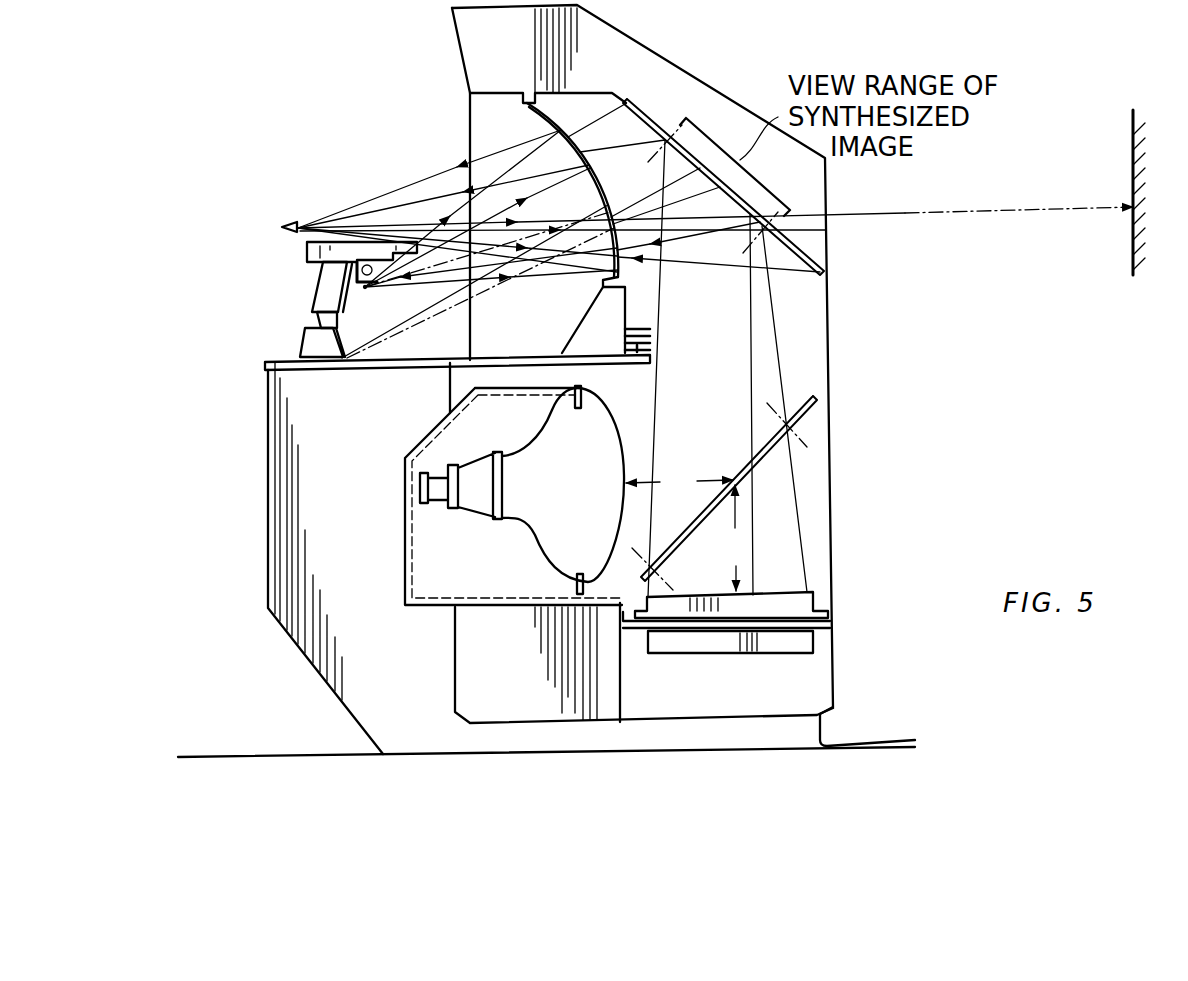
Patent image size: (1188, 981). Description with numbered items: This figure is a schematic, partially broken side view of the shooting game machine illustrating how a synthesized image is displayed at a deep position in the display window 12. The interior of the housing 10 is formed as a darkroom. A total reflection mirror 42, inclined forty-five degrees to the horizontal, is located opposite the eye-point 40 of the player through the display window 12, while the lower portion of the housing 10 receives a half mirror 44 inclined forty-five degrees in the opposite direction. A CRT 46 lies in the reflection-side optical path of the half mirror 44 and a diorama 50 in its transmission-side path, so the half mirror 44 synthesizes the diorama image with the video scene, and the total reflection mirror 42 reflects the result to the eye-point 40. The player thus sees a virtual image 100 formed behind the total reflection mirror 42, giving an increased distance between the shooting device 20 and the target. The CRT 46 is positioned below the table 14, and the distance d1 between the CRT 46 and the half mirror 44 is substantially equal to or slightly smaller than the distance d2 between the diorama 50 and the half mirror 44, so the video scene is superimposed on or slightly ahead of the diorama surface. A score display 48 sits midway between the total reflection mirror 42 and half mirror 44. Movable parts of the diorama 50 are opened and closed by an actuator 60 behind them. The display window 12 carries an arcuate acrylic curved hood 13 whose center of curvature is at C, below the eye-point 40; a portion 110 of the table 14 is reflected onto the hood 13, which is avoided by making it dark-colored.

The housing 10 is at (268, 553).
The display window 12 is at (527, 106).
The acrylic curved hood 13 is at (535, 121).
The table 14 is at (270, 362).
The shooting device 20 is at (313, 263).
The eye-point 40 is at (292, 226).
The total reflection mirror 42 is at (664, 138).
The half mirror 44 is at (817, 404).
The CRT 46 is at (600, 400).
The score display 48 is at (645, 330).
The diorama 50 is at (793, 604).
The actuator 60 is at (793, 643).
The virtual image 100 is at (1133, 150).
The reflected portion of the table 110 is at (410, 372).
The center of curvature C is at (360, 291).
The distance between CRT and half mirror d1 is at (679, 484).
The distance between diorama and half mirror d2 is at (725, 538).